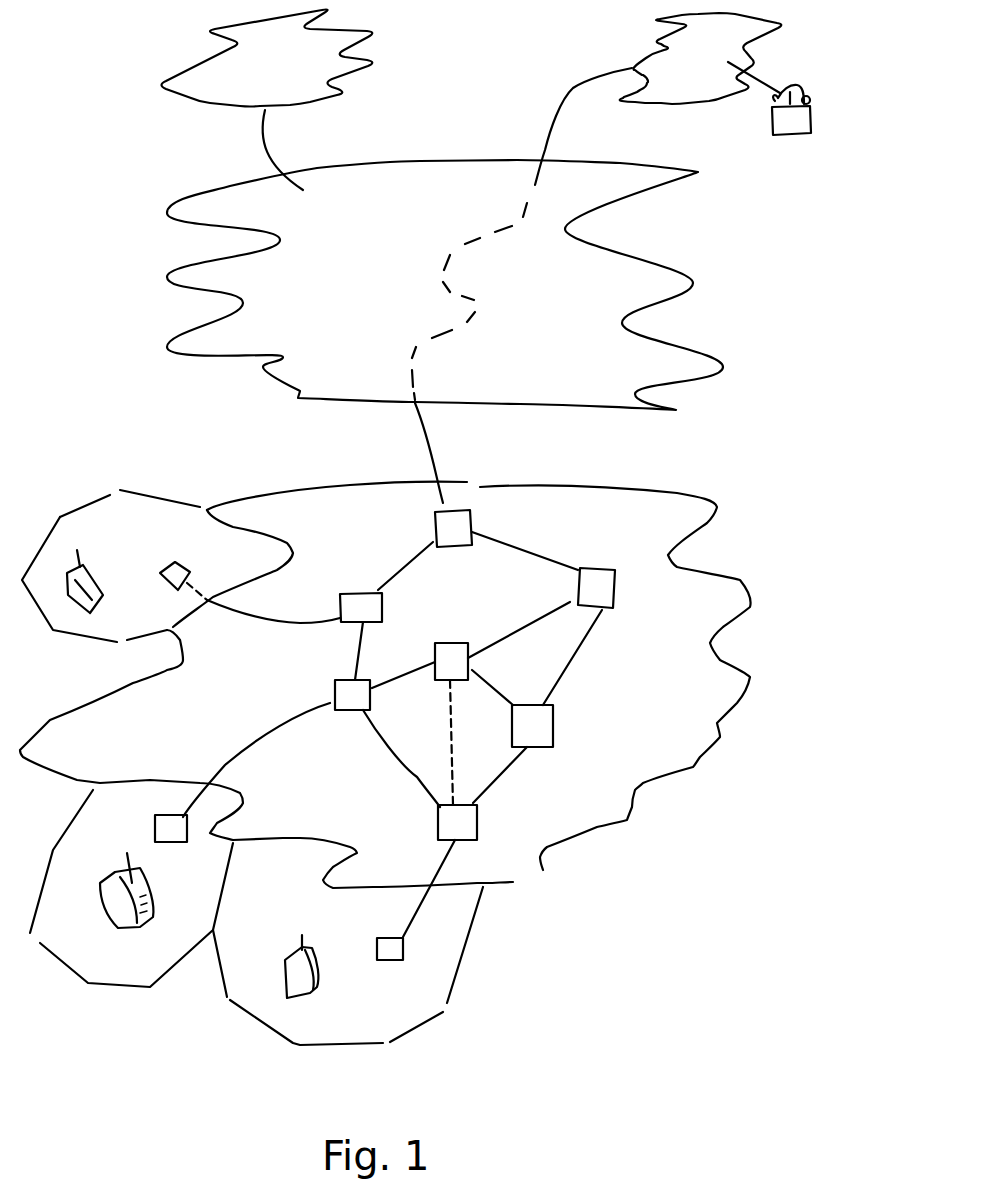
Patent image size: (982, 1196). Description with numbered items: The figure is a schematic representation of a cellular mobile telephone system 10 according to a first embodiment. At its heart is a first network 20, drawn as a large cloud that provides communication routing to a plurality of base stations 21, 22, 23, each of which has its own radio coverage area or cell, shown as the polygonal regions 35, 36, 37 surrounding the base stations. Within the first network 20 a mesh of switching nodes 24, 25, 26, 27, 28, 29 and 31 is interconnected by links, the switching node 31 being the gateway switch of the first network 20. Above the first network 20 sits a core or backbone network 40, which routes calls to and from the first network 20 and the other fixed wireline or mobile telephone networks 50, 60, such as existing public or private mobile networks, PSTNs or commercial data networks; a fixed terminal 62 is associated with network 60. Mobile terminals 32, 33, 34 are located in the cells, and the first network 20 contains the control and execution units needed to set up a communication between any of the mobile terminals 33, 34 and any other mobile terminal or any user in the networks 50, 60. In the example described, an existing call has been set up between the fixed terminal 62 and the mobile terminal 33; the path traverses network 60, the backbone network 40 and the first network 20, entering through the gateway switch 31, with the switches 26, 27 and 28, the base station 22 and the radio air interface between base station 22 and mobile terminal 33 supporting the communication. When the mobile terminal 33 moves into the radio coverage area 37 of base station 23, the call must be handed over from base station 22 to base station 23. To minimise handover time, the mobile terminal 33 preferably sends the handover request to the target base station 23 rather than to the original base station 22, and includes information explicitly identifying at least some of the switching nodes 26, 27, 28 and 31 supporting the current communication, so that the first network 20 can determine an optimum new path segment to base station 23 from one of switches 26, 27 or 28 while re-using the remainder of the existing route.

The cellular mobile telephone system 10 is at (825, 450).
The first network 20 is at (700, 622).
The base station 21 is at (180, 567).
The base station 22 is at (160, 823).
The base station 23 is at (397, 945).
The switching node 24 is at (468, 827).
The switching node 25 is at (537, 732).
The switch 26 is at (602, 588).
The switch 27 is at (455, 657).
The switch 28 is at (337, 687).
The switching node 29 is at (360, 597).
The gateway switch 31 is at (455, 525).
The mobile terminal 32 is at (90, 573).
The mobile terminal 33 is at (115, 907).
The mobile terminal 34 is at (322, 987).
The radio coverage area 35 is at (110, 515).
The radio coverage area 36 is at (130, 973).
The radio coverage area 37 is at (400, 1020).
The core network 40 is at (650, 283).
The telephone network 50 is at (267, 99).
The telephone network 60 is at (596, 206).
The fixed terminal 62 is at (800, 124).